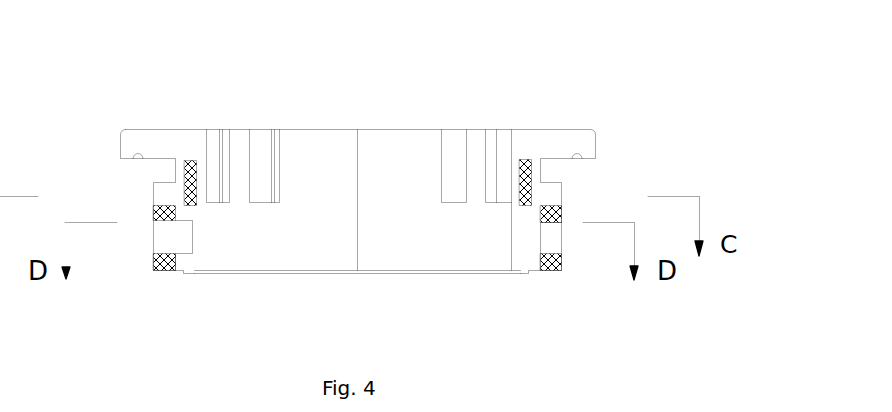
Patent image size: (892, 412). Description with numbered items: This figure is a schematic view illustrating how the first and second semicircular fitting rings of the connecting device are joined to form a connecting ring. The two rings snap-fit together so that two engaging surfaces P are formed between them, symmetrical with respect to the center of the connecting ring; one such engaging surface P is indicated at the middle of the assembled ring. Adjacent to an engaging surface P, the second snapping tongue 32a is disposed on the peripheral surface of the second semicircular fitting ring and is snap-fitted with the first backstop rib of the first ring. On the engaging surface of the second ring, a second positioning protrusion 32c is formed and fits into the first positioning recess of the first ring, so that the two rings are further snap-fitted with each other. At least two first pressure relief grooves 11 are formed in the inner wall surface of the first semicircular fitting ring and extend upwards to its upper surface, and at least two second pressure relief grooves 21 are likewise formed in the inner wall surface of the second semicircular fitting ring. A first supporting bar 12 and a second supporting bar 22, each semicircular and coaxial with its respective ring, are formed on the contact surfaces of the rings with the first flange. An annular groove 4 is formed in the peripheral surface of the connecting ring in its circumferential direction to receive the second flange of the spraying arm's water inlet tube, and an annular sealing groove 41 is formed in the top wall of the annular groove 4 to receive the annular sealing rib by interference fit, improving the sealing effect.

The annular groove 4 is at (542, 168).
The annular sealing groove 41 is at (138, 153).
The first pressure relief groove 11 is at (457, 143).
The second pressure relief groove 21 is at (259, 140).
The engaging surface P is at (358, 139).
The second positioning protrusion 32c is at (187, 160).
The second snapping tongue 32a is at (155, 212).
The first supporting bar 12 is at (185, 272).
The second supporting bar 22 is at (528, 272).